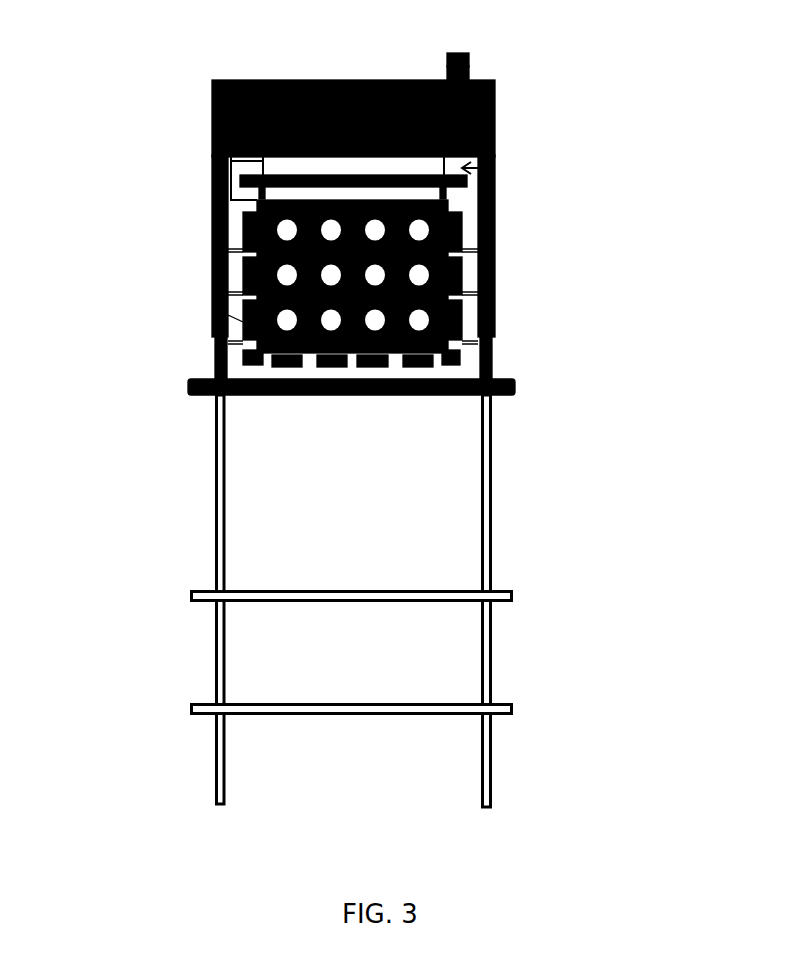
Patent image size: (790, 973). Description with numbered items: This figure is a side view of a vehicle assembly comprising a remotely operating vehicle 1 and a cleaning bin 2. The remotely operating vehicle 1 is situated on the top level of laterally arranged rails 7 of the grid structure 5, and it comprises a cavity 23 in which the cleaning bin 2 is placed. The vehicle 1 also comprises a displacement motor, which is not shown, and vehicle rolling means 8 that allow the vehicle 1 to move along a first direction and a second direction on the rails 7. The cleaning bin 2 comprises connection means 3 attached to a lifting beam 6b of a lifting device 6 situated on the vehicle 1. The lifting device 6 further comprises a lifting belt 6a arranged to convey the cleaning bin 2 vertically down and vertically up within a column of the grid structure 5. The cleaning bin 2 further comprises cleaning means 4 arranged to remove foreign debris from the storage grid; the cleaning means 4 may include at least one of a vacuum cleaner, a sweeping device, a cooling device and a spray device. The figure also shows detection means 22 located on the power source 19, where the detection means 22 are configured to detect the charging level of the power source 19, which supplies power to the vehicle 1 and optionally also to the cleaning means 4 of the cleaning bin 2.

The remotely operating vehicle 1 is at (212, 107).
The cleaning bin 2 is at (433, 295).
The connection means 3 is at (212, 200).
The cleaning means 4 is at (212, 312).
The grid structure 5 is at (217, 507).
The lifting device 6 is at (495, 165).
The lifting belt 6a is at (212, 162).
The lifting beam 6b is at (495, 183).
The rails 7 is at (515, 385).
The vehicle rolling means 8 is at (492, 350).
The power source 19 is at (469, 59).
The detection means 22 is at (469, 70).
The cavity 23 is at (462, 228).